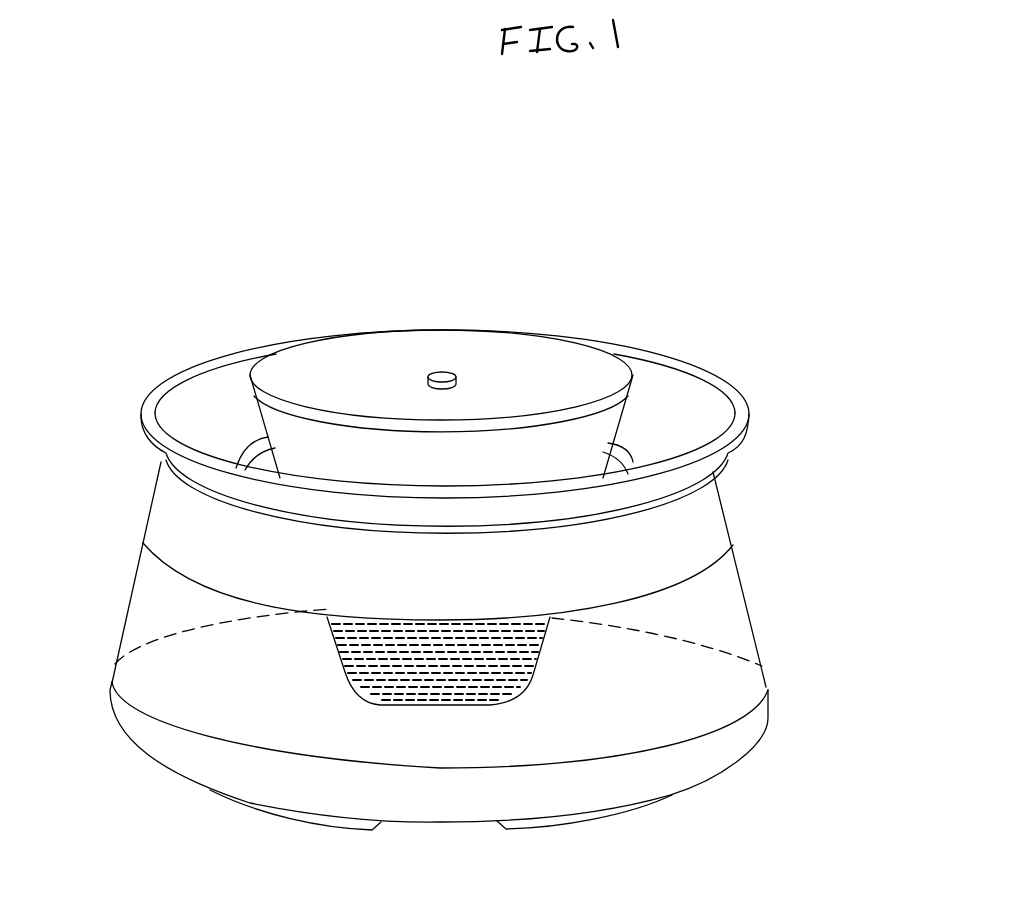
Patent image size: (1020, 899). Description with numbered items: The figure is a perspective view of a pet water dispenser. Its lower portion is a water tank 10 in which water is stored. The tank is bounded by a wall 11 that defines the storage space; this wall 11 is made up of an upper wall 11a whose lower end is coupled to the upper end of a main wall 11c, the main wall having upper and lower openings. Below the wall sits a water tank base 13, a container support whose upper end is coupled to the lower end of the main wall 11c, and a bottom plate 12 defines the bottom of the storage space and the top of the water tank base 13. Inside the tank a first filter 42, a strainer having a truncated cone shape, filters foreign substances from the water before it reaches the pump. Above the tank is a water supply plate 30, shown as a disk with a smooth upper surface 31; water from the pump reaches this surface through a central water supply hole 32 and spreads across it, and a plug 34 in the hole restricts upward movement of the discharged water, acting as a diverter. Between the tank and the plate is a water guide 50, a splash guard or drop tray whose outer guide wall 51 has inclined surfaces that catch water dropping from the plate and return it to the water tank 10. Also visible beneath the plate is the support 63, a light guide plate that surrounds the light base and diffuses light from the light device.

The water tank 10 is at (768, 642).
The wall 11 is at (868, 518).
The upper wall 11a is at (702, 538).
The main wall 11c is at (702, 583).
The bottom plate 12 is at (647, 728).
The water tank base 13 is at (727, 740).
The water supply plate 30 is at (570, 373).
The upper surface 31 is at (527, 355).
The water supply hole 32 is at (427, 383).
The plug 34 is at (443, 373).
The first filter 42 is at (322, 652).
The water guide 50 is at (756, 421).
The outer guide wall 51 is at (719, 465).
The support 63 is at (575, 448).